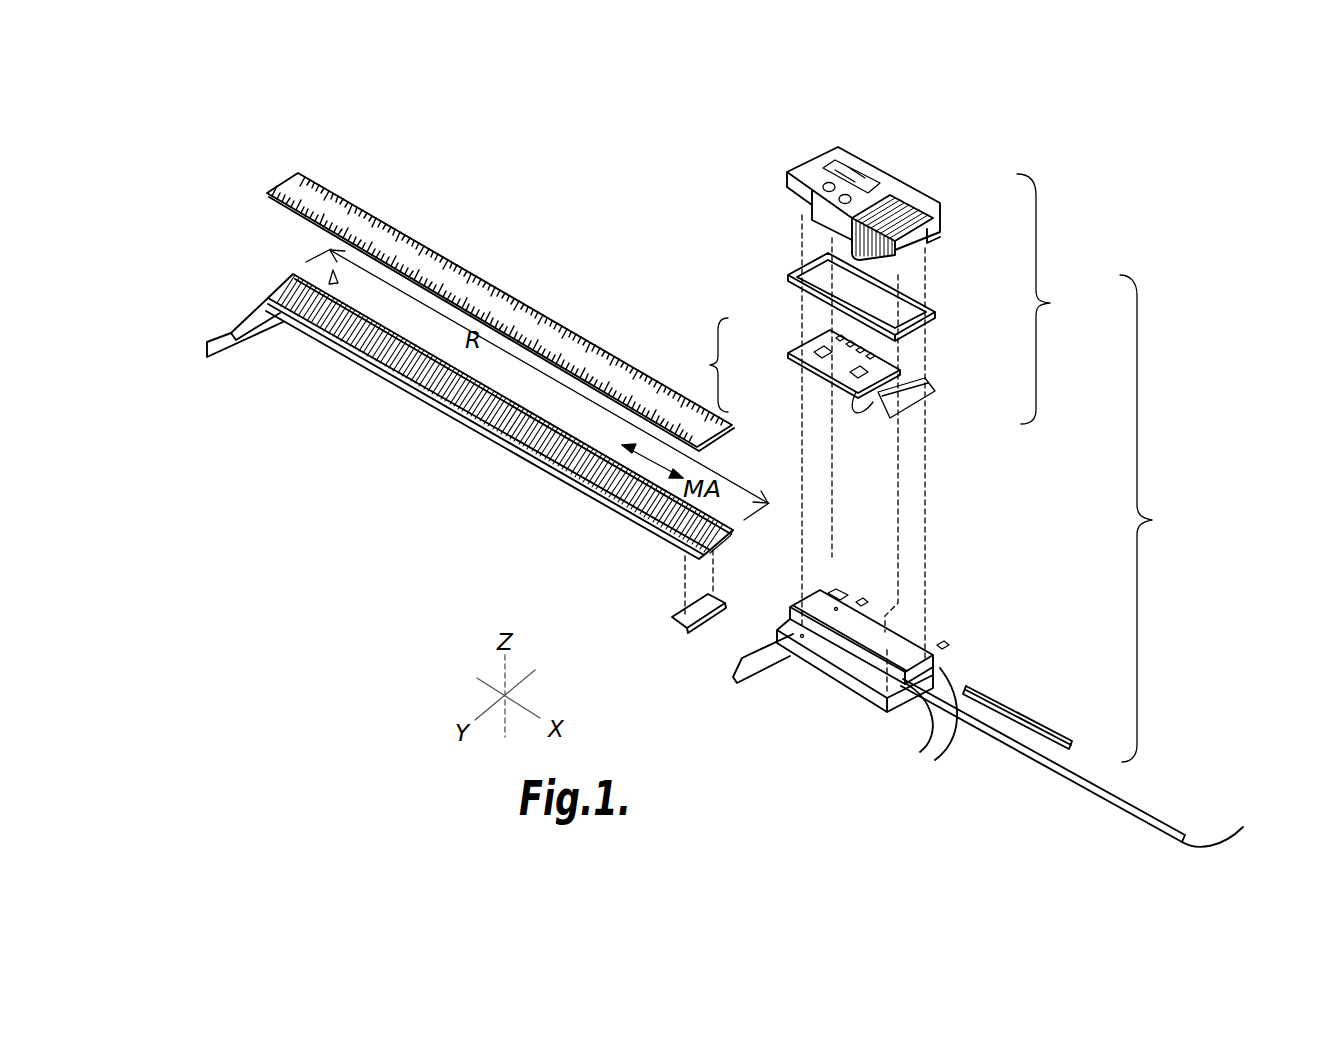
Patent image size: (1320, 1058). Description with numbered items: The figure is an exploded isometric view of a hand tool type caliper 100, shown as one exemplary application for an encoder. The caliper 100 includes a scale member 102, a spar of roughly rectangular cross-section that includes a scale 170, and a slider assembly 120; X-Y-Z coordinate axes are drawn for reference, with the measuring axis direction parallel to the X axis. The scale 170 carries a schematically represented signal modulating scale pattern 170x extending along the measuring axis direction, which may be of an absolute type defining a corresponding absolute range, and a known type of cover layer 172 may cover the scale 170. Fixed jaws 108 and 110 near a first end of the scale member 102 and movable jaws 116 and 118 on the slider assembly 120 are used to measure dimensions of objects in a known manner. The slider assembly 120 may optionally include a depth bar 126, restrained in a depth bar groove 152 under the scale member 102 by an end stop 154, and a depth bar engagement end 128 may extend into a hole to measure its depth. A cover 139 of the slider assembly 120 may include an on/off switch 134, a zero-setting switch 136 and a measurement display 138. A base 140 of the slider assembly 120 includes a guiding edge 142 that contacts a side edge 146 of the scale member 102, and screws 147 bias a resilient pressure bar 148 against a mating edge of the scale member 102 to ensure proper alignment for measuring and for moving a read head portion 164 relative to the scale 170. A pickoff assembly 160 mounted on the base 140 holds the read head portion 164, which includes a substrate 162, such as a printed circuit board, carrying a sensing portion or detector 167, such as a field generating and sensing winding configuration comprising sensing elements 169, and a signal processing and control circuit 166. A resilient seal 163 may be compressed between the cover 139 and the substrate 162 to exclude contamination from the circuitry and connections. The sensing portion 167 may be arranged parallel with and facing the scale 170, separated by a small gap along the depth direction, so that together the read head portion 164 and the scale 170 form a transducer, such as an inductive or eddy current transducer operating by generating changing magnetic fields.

The caliper 100 is at (388, 538).
The scale member 102 is at (385, 355).
The fixed jaw 108 is at (237, 334).
The fixed jaw 110 is at (338, 283).
The movable jaw 116 is at (773, 662).
The movable jaw 118 is at (838, 590).
The slider assembly 120 is at (1154, 518).
The depth bar 126 is at (1023, 755).
The depth bar engagement end 128 is at (1226, 819).
The on/off switch 134 is at (829, 182).
The zero-setting switch 136 is at (846, 194).
The measurement display 138 is at (848, 170).
The cover 139 is at (940, 205).
The base 140 is at (863, 697).
The guiding edge 142 is at (920, 752).
The side edge 146 is at (567, 485).
The screws 147 is at (866, 604).
The resilient pressure bar 148 is at (1040, 725).
The depth bar groove 152 is at (720, 543).
The end stop 154 is at (679, 613).
The pickoff assembly 160 is at (1090, 312).
The substrate 162 is at (800, 340).
The resilient seal 163 is at (928, 306).
The read head portion 164 is at (701, 365).
The signal processing and control circuit 166 is at (817, 335).
The sensing portion 167 is at (880, 392).
The sensing elements 169 is at (860, 416).
The scale 170 is at (518, 449).
The signal modulating scale pattern 170x is at (456, 421).
The cover layer 172 is at (505, 306).